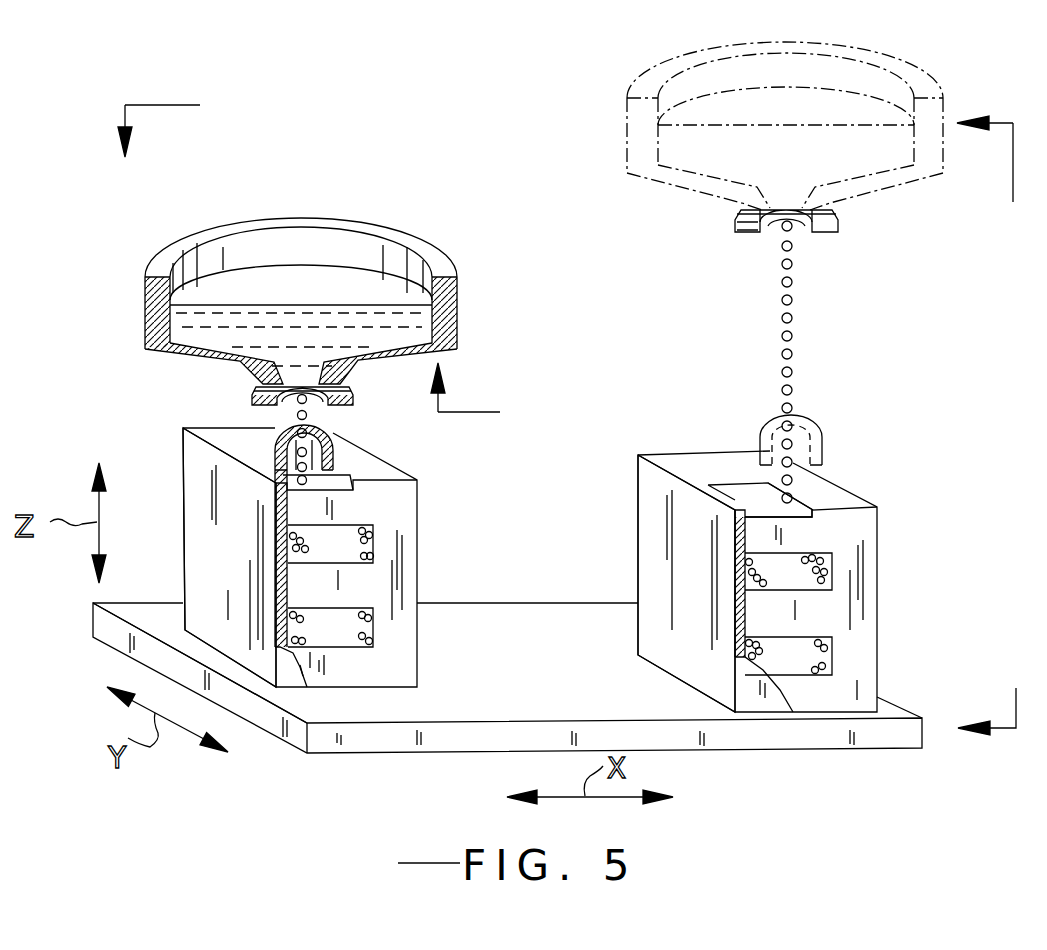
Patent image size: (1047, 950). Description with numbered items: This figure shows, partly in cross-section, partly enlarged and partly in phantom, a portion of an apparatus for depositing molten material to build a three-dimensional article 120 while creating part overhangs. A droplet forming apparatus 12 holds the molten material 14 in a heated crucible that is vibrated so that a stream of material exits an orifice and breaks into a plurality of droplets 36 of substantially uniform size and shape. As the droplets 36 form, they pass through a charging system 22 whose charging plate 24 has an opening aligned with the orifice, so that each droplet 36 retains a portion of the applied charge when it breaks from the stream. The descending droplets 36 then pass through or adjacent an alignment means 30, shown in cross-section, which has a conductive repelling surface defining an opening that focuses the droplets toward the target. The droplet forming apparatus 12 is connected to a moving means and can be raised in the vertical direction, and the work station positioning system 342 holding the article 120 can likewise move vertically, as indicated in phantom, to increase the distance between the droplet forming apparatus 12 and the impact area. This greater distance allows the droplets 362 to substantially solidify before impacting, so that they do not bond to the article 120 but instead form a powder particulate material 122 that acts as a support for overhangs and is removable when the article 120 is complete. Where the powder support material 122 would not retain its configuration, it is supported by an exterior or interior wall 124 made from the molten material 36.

The uniform droplet forming apparatus 12 is at (370, 223).
The molten material 14 is at (277, 322).
The charging system 22 is at (358, 387).
The charging plate 24 is at (745, 235).
The alignment means 30 is at (331, 444).
The droplets 36 is at (298, 418).
The three-dimensional article 120 is at (396, 518).
The powder particulate material 122 is at (373, 550).
The exterior or interior wall 124 is at (227, 553).
The base plate 342 is at (566, 673).
The solidified droplets 362 is at (795, 476).